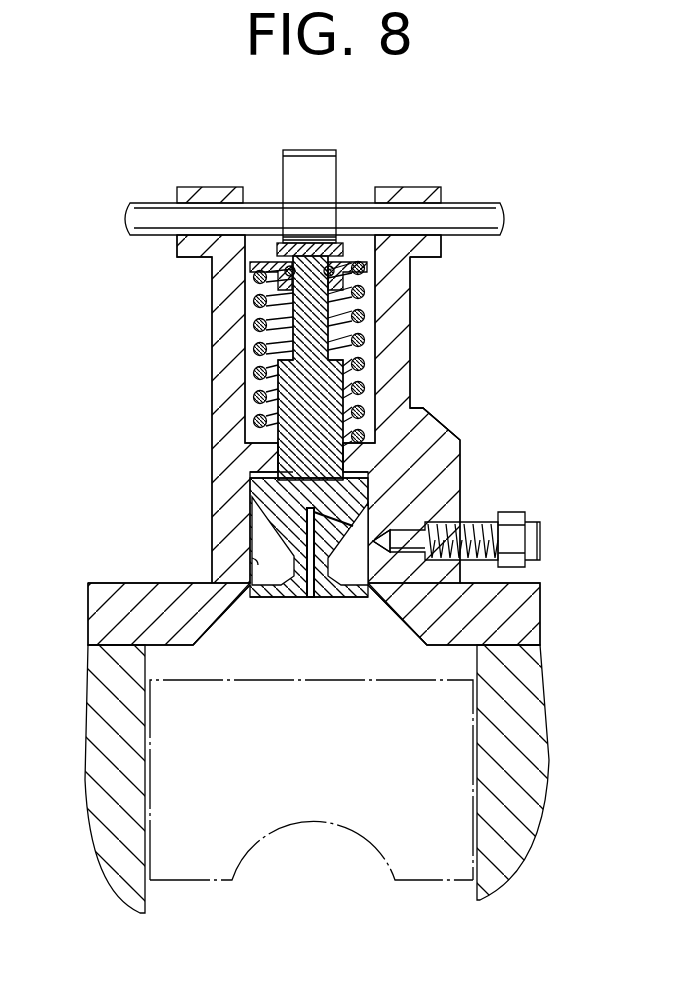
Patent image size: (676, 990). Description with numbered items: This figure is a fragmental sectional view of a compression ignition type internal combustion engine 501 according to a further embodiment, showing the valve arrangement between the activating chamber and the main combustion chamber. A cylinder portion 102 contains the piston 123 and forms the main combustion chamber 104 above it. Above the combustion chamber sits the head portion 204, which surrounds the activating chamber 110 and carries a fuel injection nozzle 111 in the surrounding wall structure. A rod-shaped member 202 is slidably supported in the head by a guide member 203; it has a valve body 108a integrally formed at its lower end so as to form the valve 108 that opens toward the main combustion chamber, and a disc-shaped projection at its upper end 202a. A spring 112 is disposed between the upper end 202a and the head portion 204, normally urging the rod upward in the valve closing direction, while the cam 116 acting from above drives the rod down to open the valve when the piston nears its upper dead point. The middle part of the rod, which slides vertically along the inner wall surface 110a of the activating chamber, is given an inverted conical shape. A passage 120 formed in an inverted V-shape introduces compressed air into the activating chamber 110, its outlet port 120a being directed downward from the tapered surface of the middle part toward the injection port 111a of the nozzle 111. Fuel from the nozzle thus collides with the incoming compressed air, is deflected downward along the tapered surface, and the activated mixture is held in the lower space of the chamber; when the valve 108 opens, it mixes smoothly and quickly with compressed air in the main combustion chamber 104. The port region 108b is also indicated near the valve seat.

The internal combustion engine 501 is at (216, 181).
The cam 116 is at (310, 168).
The rod-shaped member 202 is at (283, 290).
The upper end of rod-shaped member 202a is at (367, 267).
The spring 112 is at (362, 318).
The guide member 203 is at (283, 410).
The head portion 204 is at (230, 452).
The outlet port 120a is at (423, 462).
The injection port 111a is at (380, 528).
The fuel injection nozzle 111 is at (468, 533).
The activating chamber 110 is at (258, 528).
The inner wall surface of activating chamber 110a is at (258, 562).
The main combustion chamber 104 is at (265, 637).
The passage 120 is at (310, 592).
The valve body 108a is at (280, 595).
The valve 108 is at (342, 600).
The port 108b is at (375, 600).
The cylinder portion 102 is at (105, 753).
The piston 123 is at (452, 773).